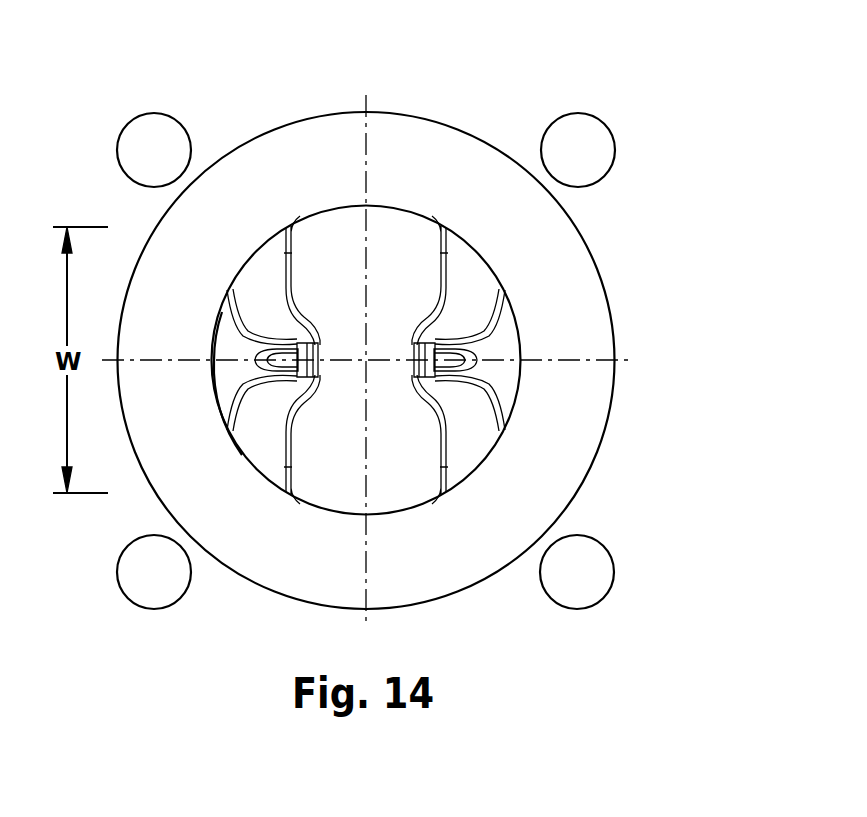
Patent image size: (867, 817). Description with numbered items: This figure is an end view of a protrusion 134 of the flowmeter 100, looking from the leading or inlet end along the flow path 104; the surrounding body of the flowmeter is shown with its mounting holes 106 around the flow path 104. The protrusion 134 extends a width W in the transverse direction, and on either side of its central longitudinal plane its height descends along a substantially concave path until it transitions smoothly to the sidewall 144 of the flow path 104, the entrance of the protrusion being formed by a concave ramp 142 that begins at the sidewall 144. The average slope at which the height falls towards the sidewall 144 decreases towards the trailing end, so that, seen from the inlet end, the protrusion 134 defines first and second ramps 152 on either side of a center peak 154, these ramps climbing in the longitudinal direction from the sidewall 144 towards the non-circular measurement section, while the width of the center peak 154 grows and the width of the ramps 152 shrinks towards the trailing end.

The fuel injector assembly 100 is at (366, 321).
The flow path 104 is at (366, 360).
The mounting holes 106 is at (366, 347).
The protrusion 134 is at (414, 325).
The concave ramp 142 is at (186, 327).
The sidewall of the flow path 144 is at (198, 425).
The first and second ramps 152 is at (350, 383).
The center peak 154 is at (366, 326).